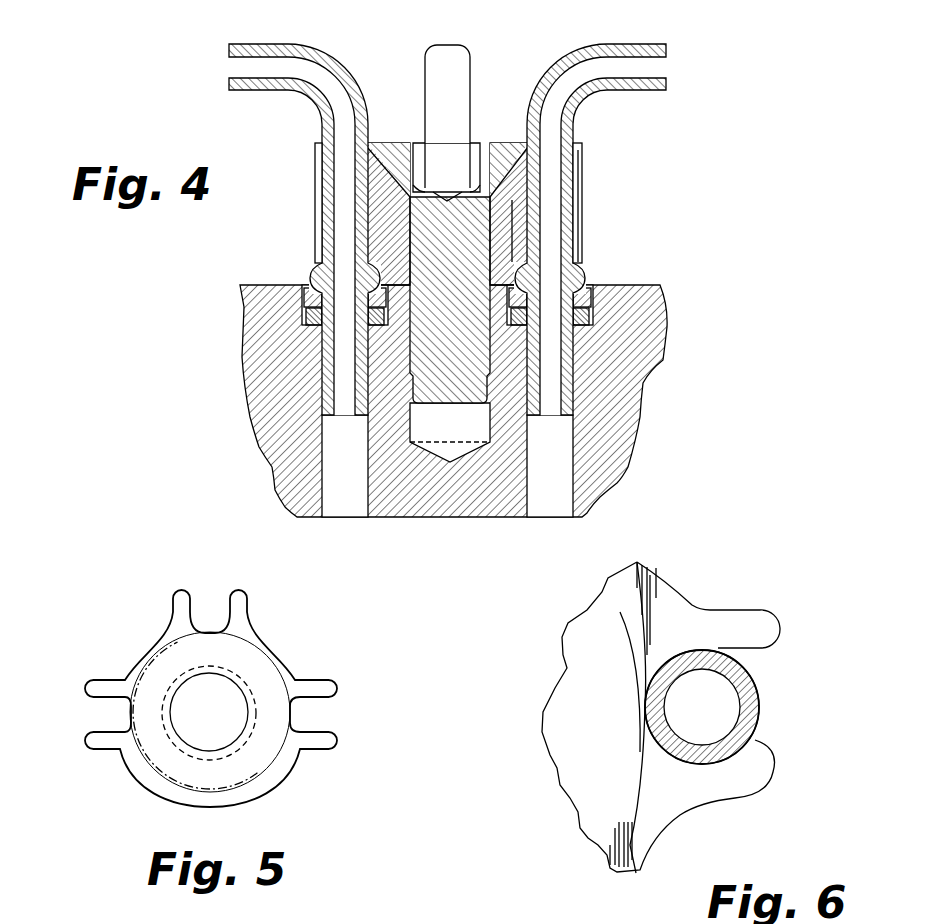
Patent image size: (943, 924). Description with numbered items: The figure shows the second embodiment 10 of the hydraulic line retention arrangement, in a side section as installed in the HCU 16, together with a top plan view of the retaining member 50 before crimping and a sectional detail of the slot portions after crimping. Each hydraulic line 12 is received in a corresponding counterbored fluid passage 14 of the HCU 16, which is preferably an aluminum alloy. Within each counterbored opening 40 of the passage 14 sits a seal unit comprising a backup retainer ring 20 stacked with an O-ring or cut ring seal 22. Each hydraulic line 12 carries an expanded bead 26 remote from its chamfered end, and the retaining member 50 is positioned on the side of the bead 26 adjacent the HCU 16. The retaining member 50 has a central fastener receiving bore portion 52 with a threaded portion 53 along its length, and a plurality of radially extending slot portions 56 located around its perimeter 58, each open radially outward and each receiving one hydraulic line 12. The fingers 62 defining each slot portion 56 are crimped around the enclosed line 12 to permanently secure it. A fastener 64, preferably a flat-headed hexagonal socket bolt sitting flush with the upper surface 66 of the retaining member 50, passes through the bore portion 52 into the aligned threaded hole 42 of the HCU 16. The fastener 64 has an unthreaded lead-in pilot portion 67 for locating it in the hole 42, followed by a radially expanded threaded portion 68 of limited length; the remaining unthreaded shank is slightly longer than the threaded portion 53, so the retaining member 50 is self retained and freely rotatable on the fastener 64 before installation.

In FIG. 4, the fuel injector assembly 10 is at (500, 73).
In FIG. 4, the hydraulic line 12 is at (262, 44).
In FIG. 6, the hydraulic line 12 is at (750, 700).
In FIG. 4, the counterbored fluid passage 14 is at (357, 510).
In FIG. 4, the ABS hydraulic control unit (HCU) 16 is at (630, 368).
In FIG. 4, the backup retainer ring 20 is at (300, 297).
In FIG. 4, the O-ring or cut ring seal 22 is at (312, 320).
In FIG. 4, the expanded bead 26 is at (315, 280).
In FIG. 4, the counterbored opening 40 is at (583, 335).
In FIG. 4, the threaded hole 42 is at (483, 425).
In FIG. 4, the retaining member 50 is at (520, 240).
In FIG. 5, the retaining member 50 is at (148, 783).
In FIG. 6, the retaining member 50 is at (647, 842).
In FIG. 5, the fastener receiving bore portion 52 is at (198, 695).
In FIG. 4, the threaded portion 53 is at (410, 222).
In FIG. 5, the threaded portion 53 is at (230, 750).
In FIG. 5, the slot portion 56 is at (210, 605).
In FIG. 5, the perimeter 58 is at (260, 650).
In FIG. 4, the fingers 62 is at (582, 180).
In FIG. 5, the fingers 62 is at (235, 593).
In FIG. 6, the fingers 62 is at (757, 628).
In FIG. 4, the fastener 64 is at (399, 155).
In FIG. 4, the upper surface 66 is at (582, 143).
In FIG. 5, the upper surface 66 is at (142, 657).
In FIG. 6, the upper surface 66 is at (657, 585).
In FIG. 4, the lead-in pilot portion 67 is at (430, 402).
In FIG. 4, the radially expanded threaded portion 68 is at (432, 316).